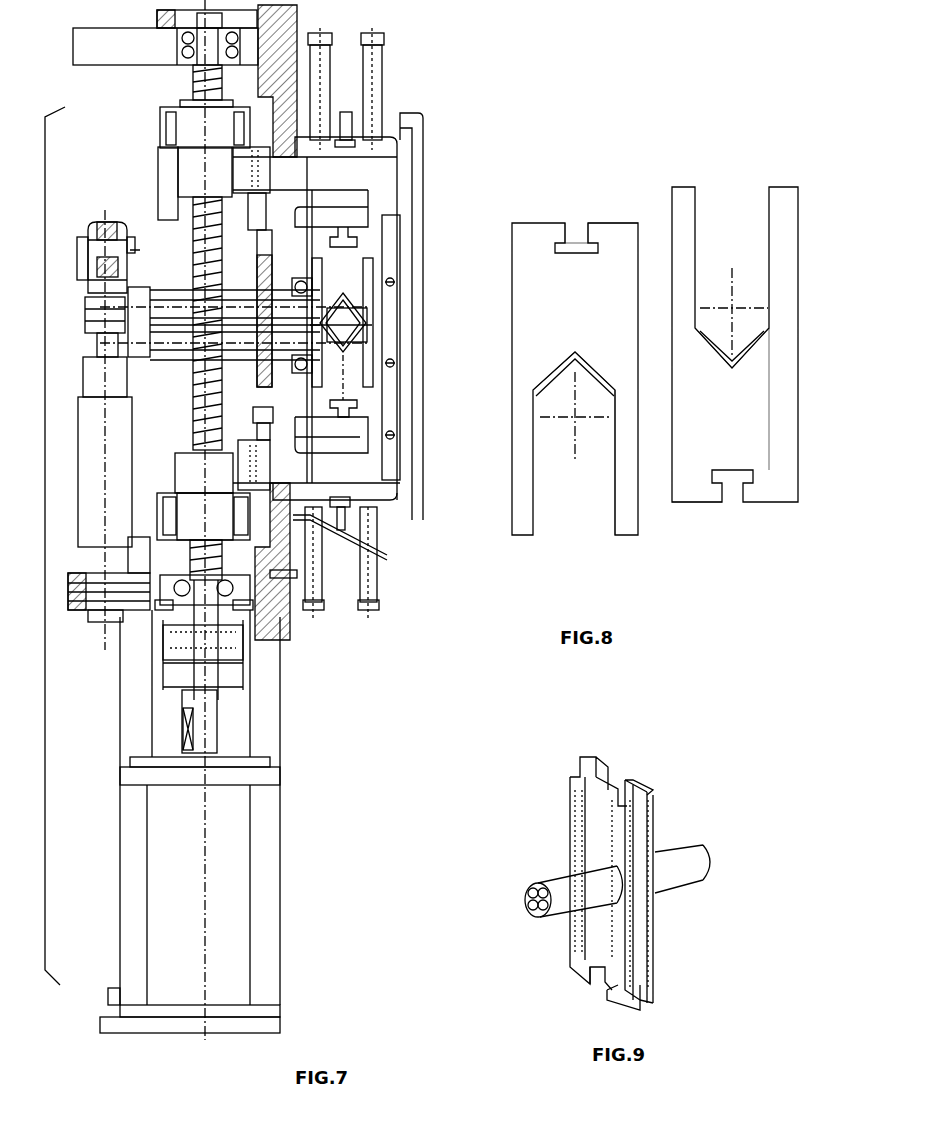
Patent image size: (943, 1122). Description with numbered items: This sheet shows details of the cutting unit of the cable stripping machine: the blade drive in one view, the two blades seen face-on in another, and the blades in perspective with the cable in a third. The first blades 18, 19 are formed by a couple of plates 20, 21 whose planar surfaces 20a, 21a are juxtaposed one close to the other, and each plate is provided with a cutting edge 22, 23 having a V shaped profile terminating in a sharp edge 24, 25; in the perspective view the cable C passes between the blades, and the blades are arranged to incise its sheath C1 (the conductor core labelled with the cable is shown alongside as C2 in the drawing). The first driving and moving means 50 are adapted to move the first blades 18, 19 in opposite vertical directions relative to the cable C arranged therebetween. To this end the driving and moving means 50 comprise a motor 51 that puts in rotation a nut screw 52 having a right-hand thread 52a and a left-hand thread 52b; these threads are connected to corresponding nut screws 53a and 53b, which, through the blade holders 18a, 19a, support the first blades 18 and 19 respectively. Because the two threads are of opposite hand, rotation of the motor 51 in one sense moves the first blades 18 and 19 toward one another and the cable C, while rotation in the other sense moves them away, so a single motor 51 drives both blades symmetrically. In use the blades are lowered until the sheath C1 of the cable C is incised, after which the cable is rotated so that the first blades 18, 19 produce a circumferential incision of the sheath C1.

In FIG. 7, the first blade 18 is at (367, 240).
In FIG. 8, the first blade 18 is at (545, 202).
In FIG. 9, the first blade 18 is at (595, 773).
In FIG. 7, the blade holder 18a is at (337, 217).
In FIG. 7, the first blade 19 is at (357, 392).
In FIG. 8, the first blade 19 is at (766, 508).
In FIG. 9, the first blade 19 is at (627, 993).
In FIG. 7, the blade holder 19a is at (338, 440).
In FIG. 8, the plate 20 is at (597, 222).
In FIG. 8, the planar surface 20a is at (620, 242).
In FIG. 8, the plate 21 is at (690, 503).
In FIG. 8, the planar surface 21a is at (772, 448).
In FIG. 8, the cutting edge 22 is at (585, 368).
In FIG. 8, the cutting edge 23 is at (715, 350).
In FIG. 8, the sharp edge 24 is at (602, 390).
In FIG. 8, the sharp edge 25 is at (707, 368).
In FIG. 7, the first driving and moving means 50 is at (43, 572).
In FIG. 7, the motor 51 is at (237, 863).
In FIG. 7, the nut screw 52 is at (172, 363).
In FIG. 7, the right-hand thread 52a is at (195, 418).
In FIG. 7, the left-hand thread 52b is at (197, 242).
In FIG. 7, the nut screw 53a is at (190, 473).
In FIG. 7, the nut screw 53b is at (195, 170).
In FIG. 9, the cable C is at (688, 862).
In FIG. 9, the sheath C1 is at (543, 883).
In FIG. 9, the cable C2 is at (538, 899).